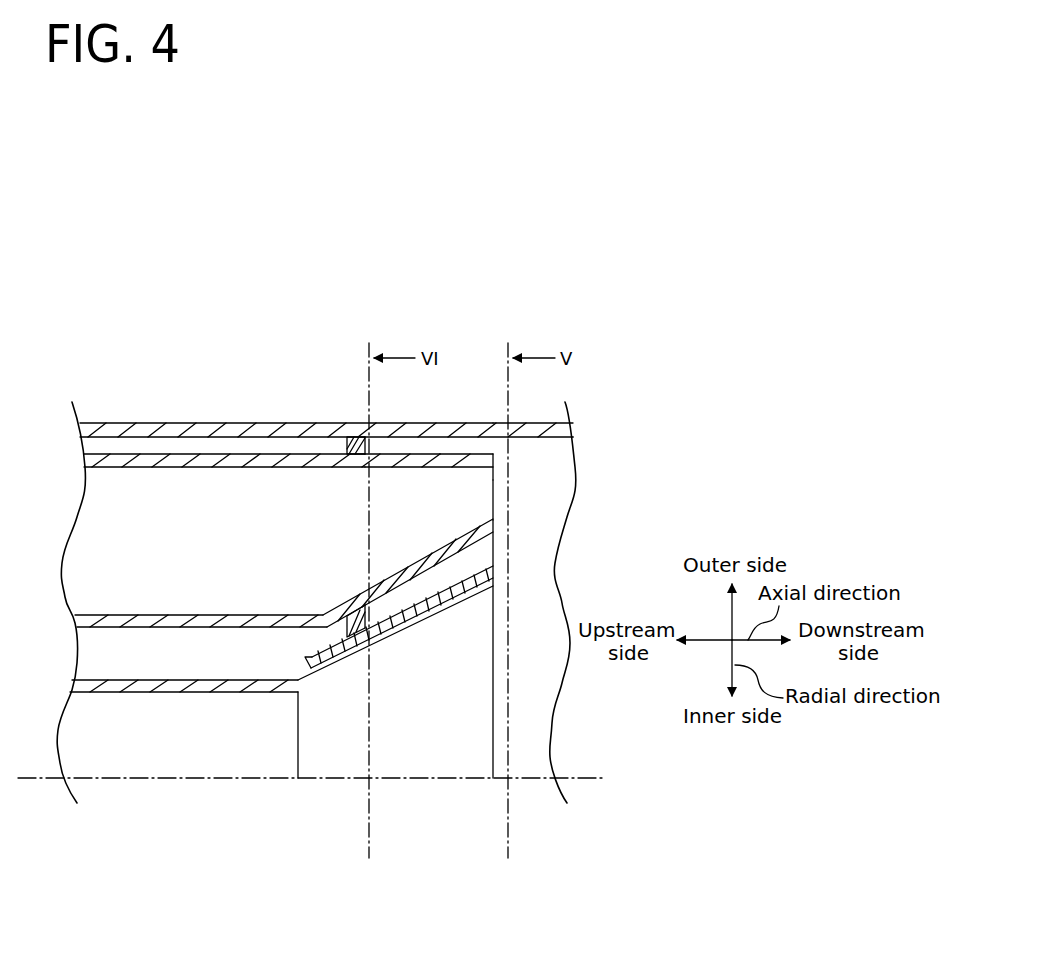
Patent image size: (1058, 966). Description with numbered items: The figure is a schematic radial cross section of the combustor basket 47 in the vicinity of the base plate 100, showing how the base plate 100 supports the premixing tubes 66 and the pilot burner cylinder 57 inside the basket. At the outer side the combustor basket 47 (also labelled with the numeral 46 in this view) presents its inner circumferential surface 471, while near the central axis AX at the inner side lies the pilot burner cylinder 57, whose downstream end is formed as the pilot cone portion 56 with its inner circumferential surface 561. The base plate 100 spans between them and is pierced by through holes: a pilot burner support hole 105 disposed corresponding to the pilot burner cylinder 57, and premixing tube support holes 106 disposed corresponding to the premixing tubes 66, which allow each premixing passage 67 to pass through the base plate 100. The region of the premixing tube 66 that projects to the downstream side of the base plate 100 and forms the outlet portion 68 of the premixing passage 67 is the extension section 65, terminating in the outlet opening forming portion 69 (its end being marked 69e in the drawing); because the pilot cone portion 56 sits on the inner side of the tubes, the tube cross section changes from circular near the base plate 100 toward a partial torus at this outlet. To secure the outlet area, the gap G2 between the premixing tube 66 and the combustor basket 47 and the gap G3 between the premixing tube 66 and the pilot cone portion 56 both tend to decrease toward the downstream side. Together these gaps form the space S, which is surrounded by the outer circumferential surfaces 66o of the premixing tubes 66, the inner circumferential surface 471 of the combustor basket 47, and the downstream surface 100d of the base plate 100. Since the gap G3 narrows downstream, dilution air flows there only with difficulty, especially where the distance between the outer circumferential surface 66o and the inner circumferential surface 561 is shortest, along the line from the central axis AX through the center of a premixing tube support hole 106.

The combustor basket 47 is at (326, 400).
The casing 46 is at (137, 423).
The premixing tube 66 is at (207, 454).
The extension section 65 is at (301, 375).
The inner circumferential surface of the combustor basket 471 is at (268, 447).
The outer circumferential surface of the premixing tube 66o is at (497, 423).
The premixing tube support hole 106 is at (364, 468).
The gap between the premixing tube and the combustor basket G2 is at (440, 447).
The space S is at (474, 446).
The base plate 100 is at (360, 612).
The downstream surface of the base plate 100d is at (366, 445).
The premixing passage 67 is at (215, 524).
The outlet portion of the premixing passage 68 is at (460, 531).
The gap between the premixing tube and the pilot cone portion G3 is at (417, 590).
The outlet opening forming portion 69 is at (493, 455).
The wall end 69e is at (493, 490).
The inner circumferential surface of the pilot cone portion 561 is at (493, 555).
The pilot burner support hole 105 is at (345, 655).
The pilot burner cylinder 57 is at (105, 680).
The pilot cone portion 56 is at (447, 757).
The central axis AX is at (587, 779).